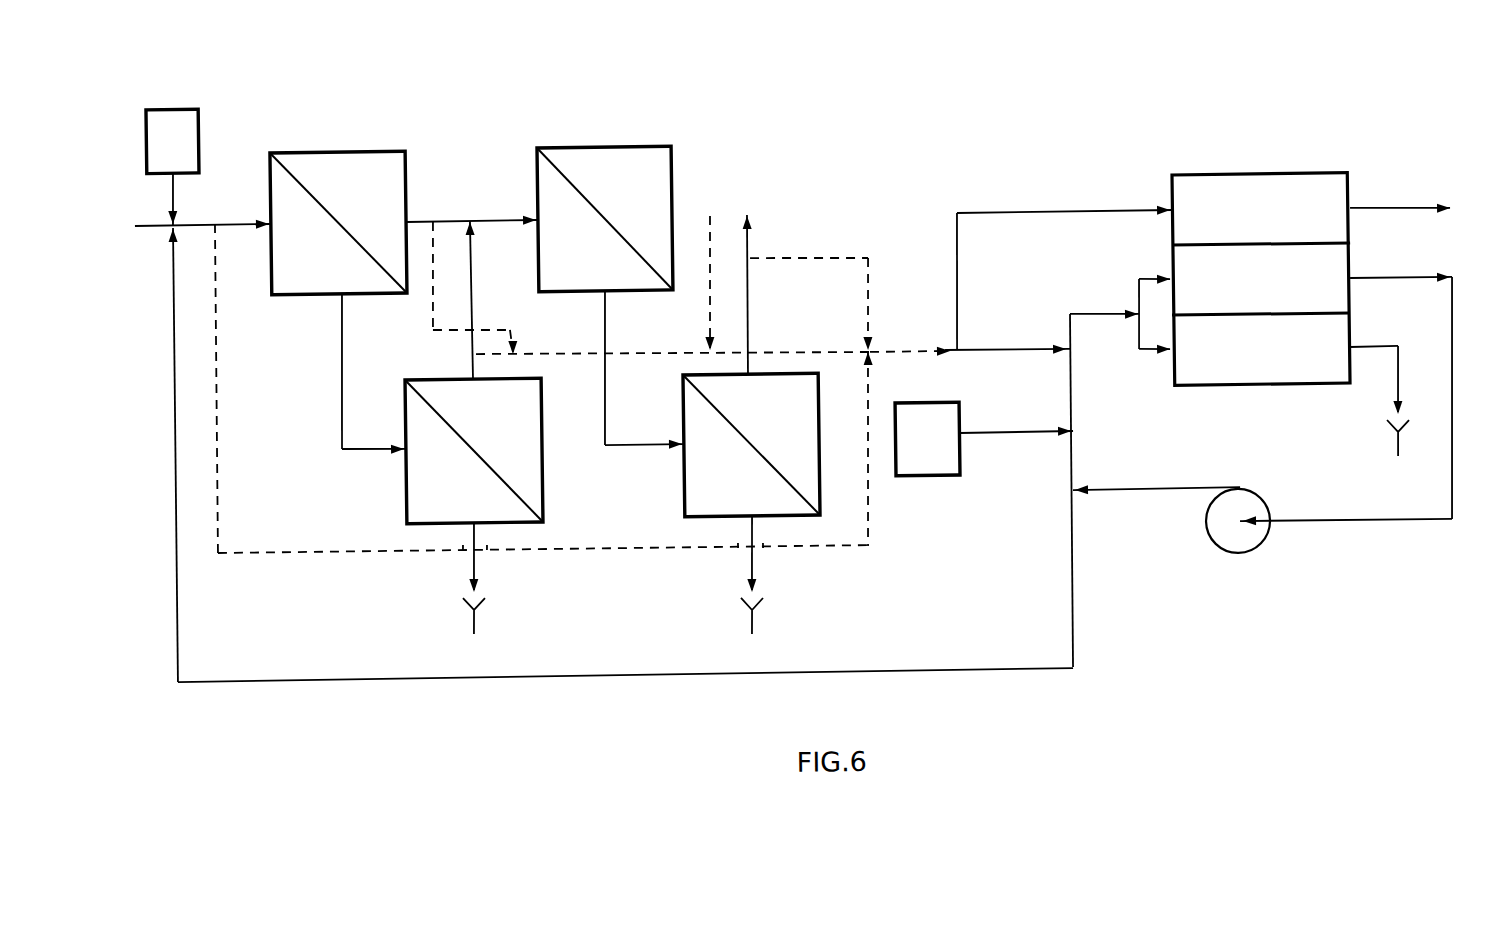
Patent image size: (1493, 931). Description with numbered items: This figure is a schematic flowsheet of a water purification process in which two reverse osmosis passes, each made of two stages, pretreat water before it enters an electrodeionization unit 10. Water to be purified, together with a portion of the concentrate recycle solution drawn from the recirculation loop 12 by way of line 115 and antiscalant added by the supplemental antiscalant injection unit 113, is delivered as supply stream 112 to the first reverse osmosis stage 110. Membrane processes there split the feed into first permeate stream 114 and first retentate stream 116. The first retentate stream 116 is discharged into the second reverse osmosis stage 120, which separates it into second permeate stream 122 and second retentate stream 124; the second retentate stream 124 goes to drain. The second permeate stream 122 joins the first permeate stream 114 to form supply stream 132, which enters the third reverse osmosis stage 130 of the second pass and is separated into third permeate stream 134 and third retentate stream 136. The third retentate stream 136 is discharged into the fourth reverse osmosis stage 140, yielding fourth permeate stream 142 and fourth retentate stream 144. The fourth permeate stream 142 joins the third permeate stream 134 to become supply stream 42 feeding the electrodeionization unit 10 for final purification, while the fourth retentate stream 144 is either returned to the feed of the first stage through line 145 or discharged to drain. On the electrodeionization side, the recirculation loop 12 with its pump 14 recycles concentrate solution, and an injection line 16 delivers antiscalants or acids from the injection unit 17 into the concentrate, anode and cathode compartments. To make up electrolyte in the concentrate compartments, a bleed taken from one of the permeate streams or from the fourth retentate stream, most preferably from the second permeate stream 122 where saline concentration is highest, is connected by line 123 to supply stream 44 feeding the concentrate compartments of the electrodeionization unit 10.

The electrodeionization unit 10 is at (1280, 166).
The recirculation loop 12 is at (1423, 530).
The pump 14 is at (1260, 549).
The injection line 16 is at (994, 441).
The injection unit 17 is at (924, 478).
The supply stream 42 is at (1052, 216).
The supply stream 44 is at (1140, 306).
The first reverse osmosis stage 110 is at (346, 147).
The supply stream 112 is at (247, 217).
The supplemental antiscalant injection unit 113 is at (203, 116).
The first permeate stream 114 is at (457, 218).
The line 115 is at (175, 613).
The first retentate stream 116 is at (342, 405).
The second reverse osmosis stage 120 is at (437, 375).
The second permeate stream 122 is at (471, 302).
The line 123 is at (929, 353).
The second retentate stream 124 is at (472, 565).
The third reverse osmosis stage 130 is at (603, 146).
The supply stream 132 is at (484, 216).
The third permeate stream 134 is at (729, 214).
The third retentate stream 136 is at (606, 304).
The fourth reverse osmosis stage 140 is at (780, 376).
The fourth permeate stream 142 is at (750, 281).
The fourth retentate stream 144 is at (750, 529).
The line 145 is at (216, 472).